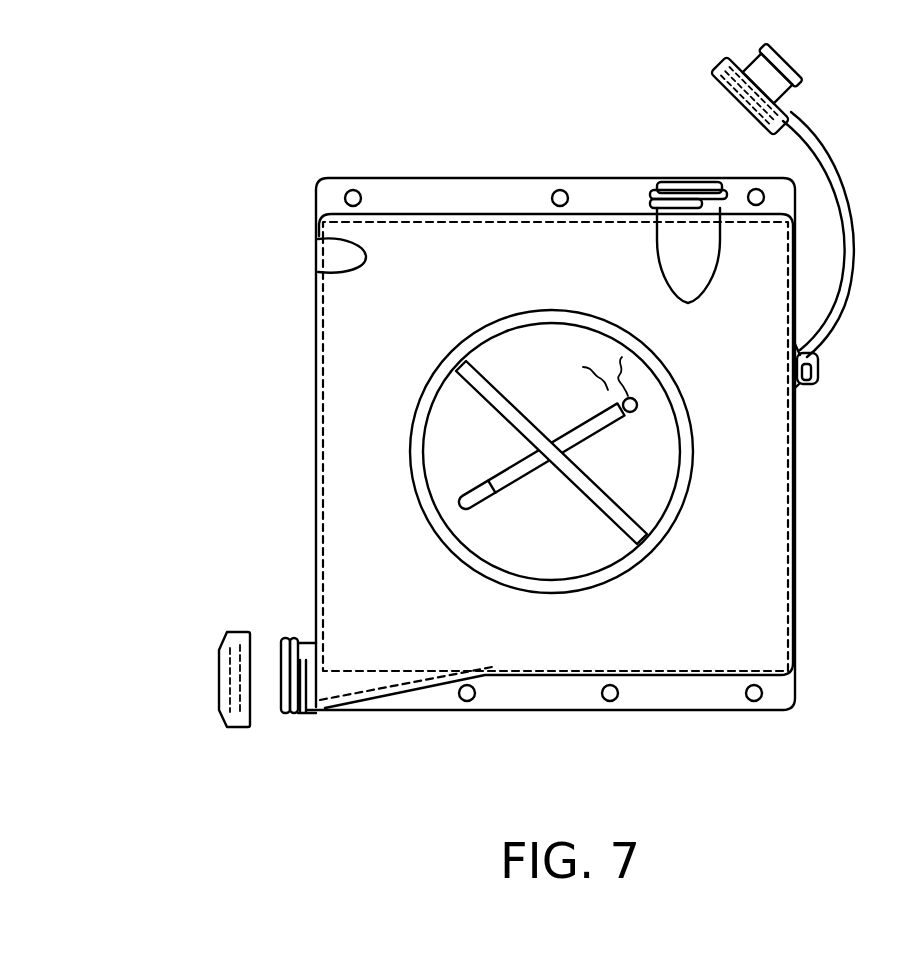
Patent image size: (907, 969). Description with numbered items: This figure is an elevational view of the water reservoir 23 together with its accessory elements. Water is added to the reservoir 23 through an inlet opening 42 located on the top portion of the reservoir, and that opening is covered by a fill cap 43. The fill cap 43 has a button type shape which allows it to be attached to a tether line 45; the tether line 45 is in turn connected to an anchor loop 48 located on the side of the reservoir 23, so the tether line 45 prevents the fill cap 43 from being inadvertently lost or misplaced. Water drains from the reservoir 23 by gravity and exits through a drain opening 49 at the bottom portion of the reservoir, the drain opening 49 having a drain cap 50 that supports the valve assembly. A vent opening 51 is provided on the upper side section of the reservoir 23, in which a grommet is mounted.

The reservoir 23 is at (423, 94).
The inlet opening 42 is at (679, 182).
The fill cap 43 is at (714, 70).
The tether line 45 is at (834, 146).
The anchor loop 48 is at (814, 380).
The drain opening 49 is at (282, 698).
The drain cap 50 is at (224, 720).
The vent opening 51 is at (318, 258).